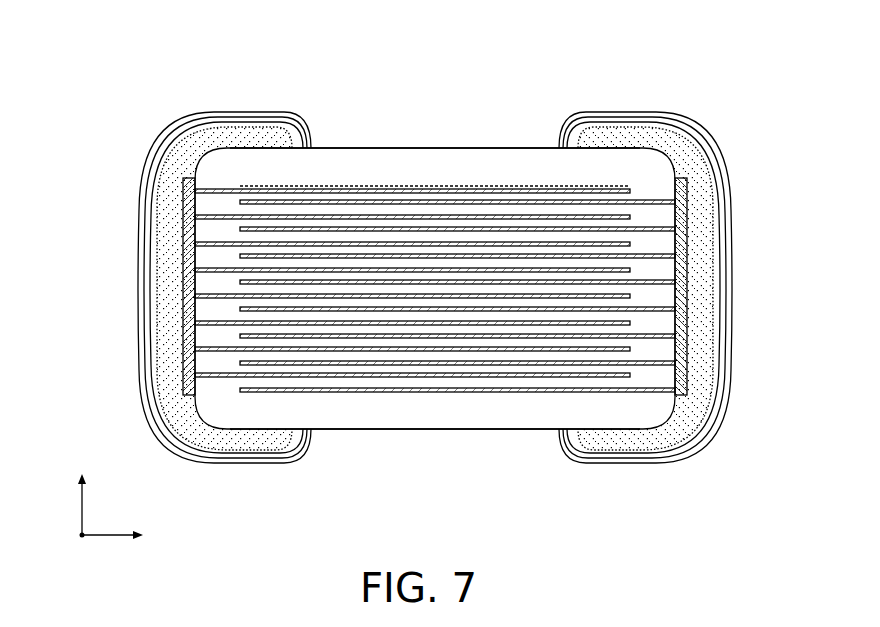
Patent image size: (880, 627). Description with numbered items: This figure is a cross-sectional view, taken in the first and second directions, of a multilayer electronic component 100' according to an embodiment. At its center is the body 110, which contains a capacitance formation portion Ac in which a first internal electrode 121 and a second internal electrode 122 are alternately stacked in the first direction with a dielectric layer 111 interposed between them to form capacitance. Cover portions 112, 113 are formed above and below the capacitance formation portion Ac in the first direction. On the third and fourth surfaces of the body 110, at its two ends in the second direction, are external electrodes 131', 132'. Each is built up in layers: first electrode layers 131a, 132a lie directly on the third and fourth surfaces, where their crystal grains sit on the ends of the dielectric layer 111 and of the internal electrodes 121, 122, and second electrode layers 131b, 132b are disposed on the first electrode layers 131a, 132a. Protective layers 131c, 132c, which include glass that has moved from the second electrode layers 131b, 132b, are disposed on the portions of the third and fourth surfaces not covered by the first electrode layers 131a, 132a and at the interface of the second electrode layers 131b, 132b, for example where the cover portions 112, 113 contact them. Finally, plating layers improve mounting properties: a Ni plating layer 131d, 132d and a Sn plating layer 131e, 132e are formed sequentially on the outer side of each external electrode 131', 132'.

The multilayer electronic component 100' is at (435, 305).
The body 110 is at (378, 147).
The dielectric layer 111 is at (320, 223).
The cover portion 112 is at (436, 160).
The cover portion 113 is at (438, 417).
The first internal electrode 121 is at (483, 191).
The second internal electrode 122 is at (549, 202).
The capacitance formation portion Ac is at (435, 280).
The external electrode 131' is at (159, 287).
The first electrode layer 131a is at (183, 260).
The second electrode layer 131b is at (163, 289).
The protective layer 131c is at (150, 215).
The Ni plating layer 131d is at (147, 322).
The Sn plating layer 131e is at (64, 210).
The external electrode 132' is at (711, 287).
The first electrode layer 132a is at (687, 260).
The second electrode layer 132b is at (707, 289).
The protective layer 132c is at (720, 215).
The Ni plating layer 132d is at (723, 322).
The Sn plating layer 132e is at (806, 210).